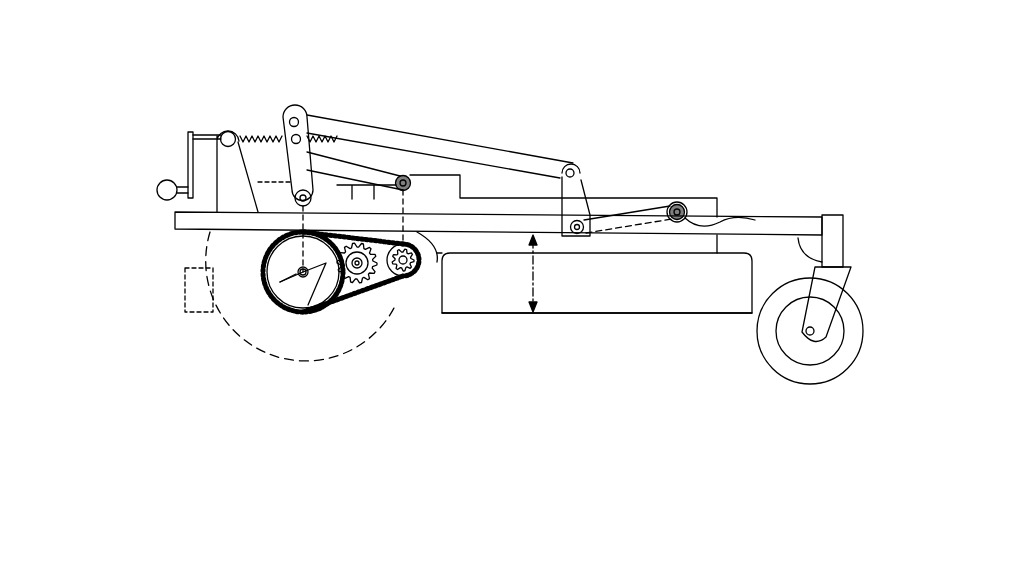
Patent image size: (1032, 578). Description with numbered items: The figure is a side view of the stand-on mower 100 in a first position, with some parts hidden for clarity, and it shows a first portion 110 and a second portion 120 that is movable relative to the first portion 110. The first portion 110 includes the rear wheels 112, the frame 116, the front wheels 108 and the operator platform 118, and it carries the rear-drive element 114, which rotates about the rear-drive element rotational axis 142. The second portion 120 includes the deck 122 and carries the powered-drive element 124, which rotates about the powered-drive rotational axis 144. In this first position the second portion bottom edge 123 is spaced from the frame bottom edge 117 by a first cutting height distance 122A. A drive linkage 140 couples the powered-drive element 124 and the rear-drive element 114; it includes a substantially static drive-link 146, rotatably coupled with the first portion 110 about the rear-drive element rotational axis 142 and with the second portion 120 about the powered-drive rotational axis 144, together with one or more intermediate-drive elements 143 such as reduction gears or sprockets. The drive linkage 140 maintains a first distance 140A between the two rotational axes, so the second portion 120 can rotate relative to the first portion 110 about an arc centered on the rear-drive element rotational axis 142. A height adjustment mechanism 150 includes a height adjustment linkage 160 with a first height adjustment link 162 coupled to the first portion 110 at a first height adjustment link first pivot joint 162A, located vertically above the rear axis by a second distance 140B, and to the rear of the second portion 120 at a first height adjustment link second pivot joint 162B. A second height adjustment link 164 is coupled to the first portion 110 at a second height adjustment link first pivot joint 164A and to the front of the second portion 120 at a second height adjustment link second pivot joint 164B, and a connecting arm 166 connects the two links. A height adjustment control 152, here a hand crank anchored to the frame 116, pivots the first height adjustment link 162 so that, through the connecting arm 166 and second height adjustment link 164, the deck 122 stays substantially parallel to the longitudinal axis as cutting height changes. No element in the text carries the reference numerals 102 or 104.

The stand-on mower 100 is at (643, 58).
The frame 102 is at (846, 228).
The frame member 104 is at (173, 218).
The front wheels 108 is at (850, 337).
The first portion 110 is at (83, 223).
The rear wheels 112 is at (212, 318).
The rear-drive element 114 is at (280, 282).
The frame 116 is at (832, 213).
The frame bottom edge 117 is at (850, 270).
The operator platform 118 is at (192, 286).
The second portion 120 is at (566, 340).
The deck 122 is at (667, 286).
The first cutting height distance 122A is at (531, 283).
The second portion bottom edge 123 is at (605, 317).
The powered-drive element 124 is at (416, 268).
The drive linkage 140 is at (441, 368).
The first distance 140A is at (304, 280).
The second distance 140B is at (258, 233).
The rear-drive element rotational axis 142 is at (281, 300).
The intermediate-drive element 143 is at (352, 300).
The powered-drive rotational axis 144 is at (398, 286).
The drive-link 146 is at (343, 296).
The height adjustment mechanism 150 is at (285, 60).
The height adjustment control 152 is at (182, 110).
The height adjustment linkage 160 is at (523, 125).
The first height adjustment link 162 is at (335, 152).
The first height adjustment link first pivot joint 162A is at (256, 166).
The first height adjustment link second pivot joint 162B is at (400, 172).
The second height adjustment link 164 is at (616, 196).
The second height adjustment link first pivot joint 164A is at (584, 190).
The second height adjustment link second pivot joint 164B is at (738, 222).
The connecting arm 166 is at (484, 158).